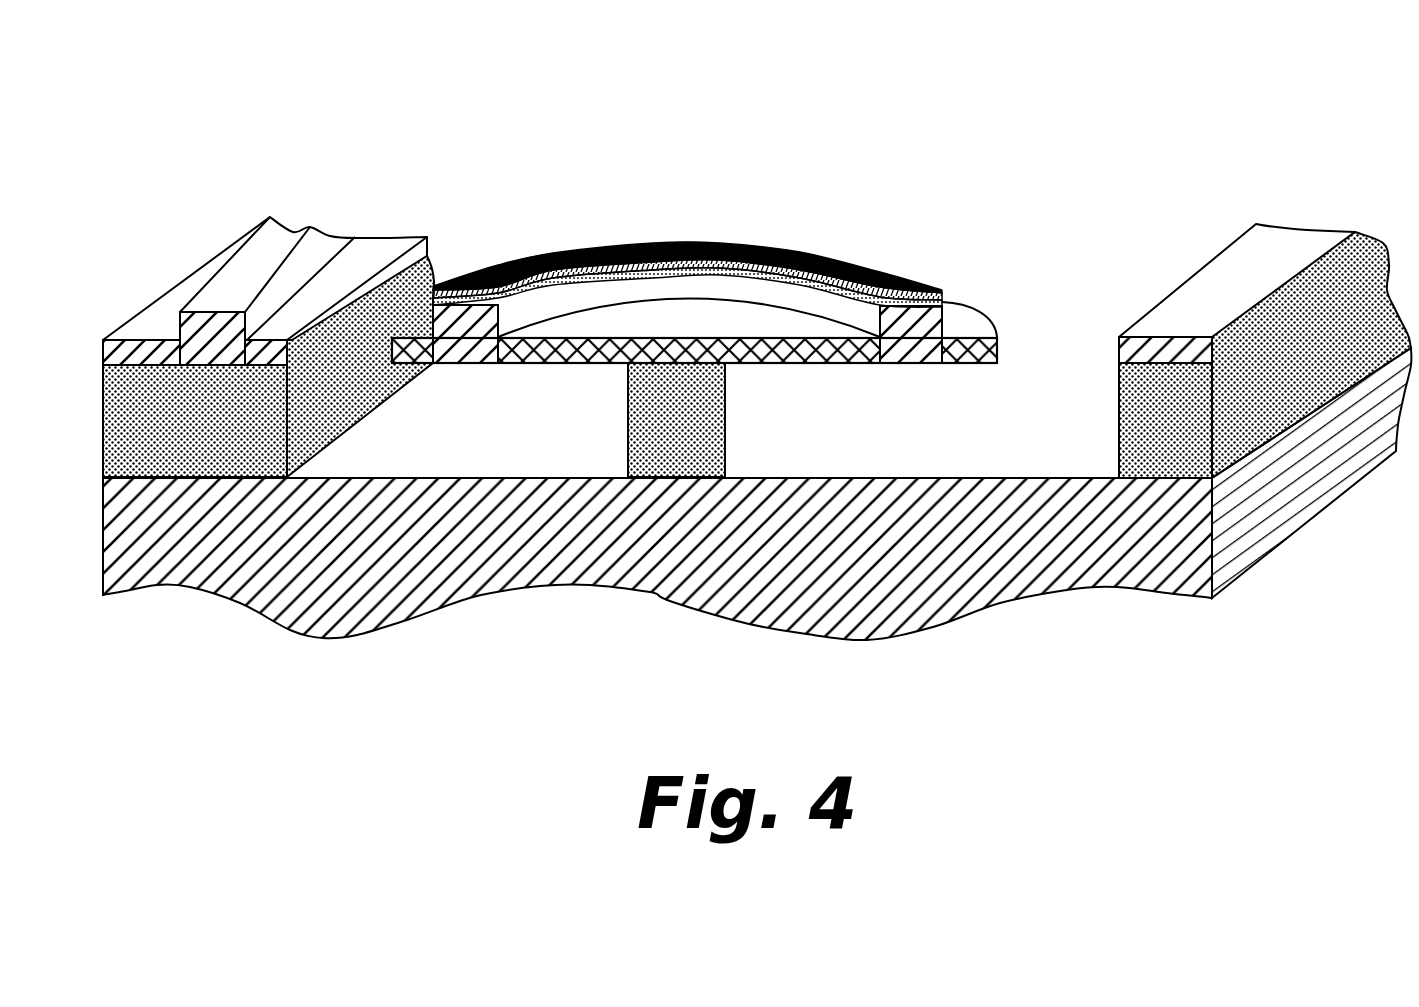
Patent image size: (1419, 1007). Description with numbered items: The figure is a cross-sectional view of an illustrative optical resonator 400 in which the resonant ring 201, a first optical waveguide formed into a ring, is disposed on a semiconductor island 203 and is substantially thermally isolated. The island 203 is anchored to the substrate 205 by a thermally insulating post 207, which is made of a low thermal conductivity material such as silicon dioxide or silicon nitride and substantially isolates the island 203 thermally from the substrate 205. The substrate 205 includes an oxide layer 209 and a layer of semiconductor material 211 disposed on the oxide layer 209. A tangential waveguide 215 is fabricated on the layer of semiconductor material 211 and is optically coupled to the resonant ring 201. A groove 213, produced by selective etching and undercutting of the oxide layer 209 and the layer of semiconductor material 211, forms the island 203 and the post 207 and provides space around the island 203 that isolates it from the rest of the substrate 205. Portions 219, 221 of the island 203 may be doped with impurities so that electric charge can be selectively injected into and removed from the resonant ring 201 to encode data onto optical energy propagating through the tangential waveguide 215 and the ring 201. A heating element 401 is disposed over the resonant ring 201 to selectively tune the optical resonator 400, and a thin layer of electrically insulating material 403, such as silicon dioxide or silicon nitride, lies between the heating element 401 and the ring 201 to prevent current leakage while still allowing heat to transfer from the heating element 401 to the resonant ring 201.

The optical resonator 400 is at (278, 112).
The resonant ring 201 is at (915, 350).
The semiconductor island 203 is at (997, 337).
The substrate 205 is at (1261, 511).
The thermally insulating post 207 is at (695, 403).
The oxide layer 209 is at (1312, 316).
The layer of semiconductor material 211 is at (1228, 352).
The groove 213 is at (1000, 407).
The tangential waveguide 215 is at (200, 337).
The doped portion of the island 219 is at (515, 350).
The doped portion of the island 221 is at (978, 358).
The heating element 401 is at (945, 297).
The layer of electrically insulating material 403 is at (960, 307).